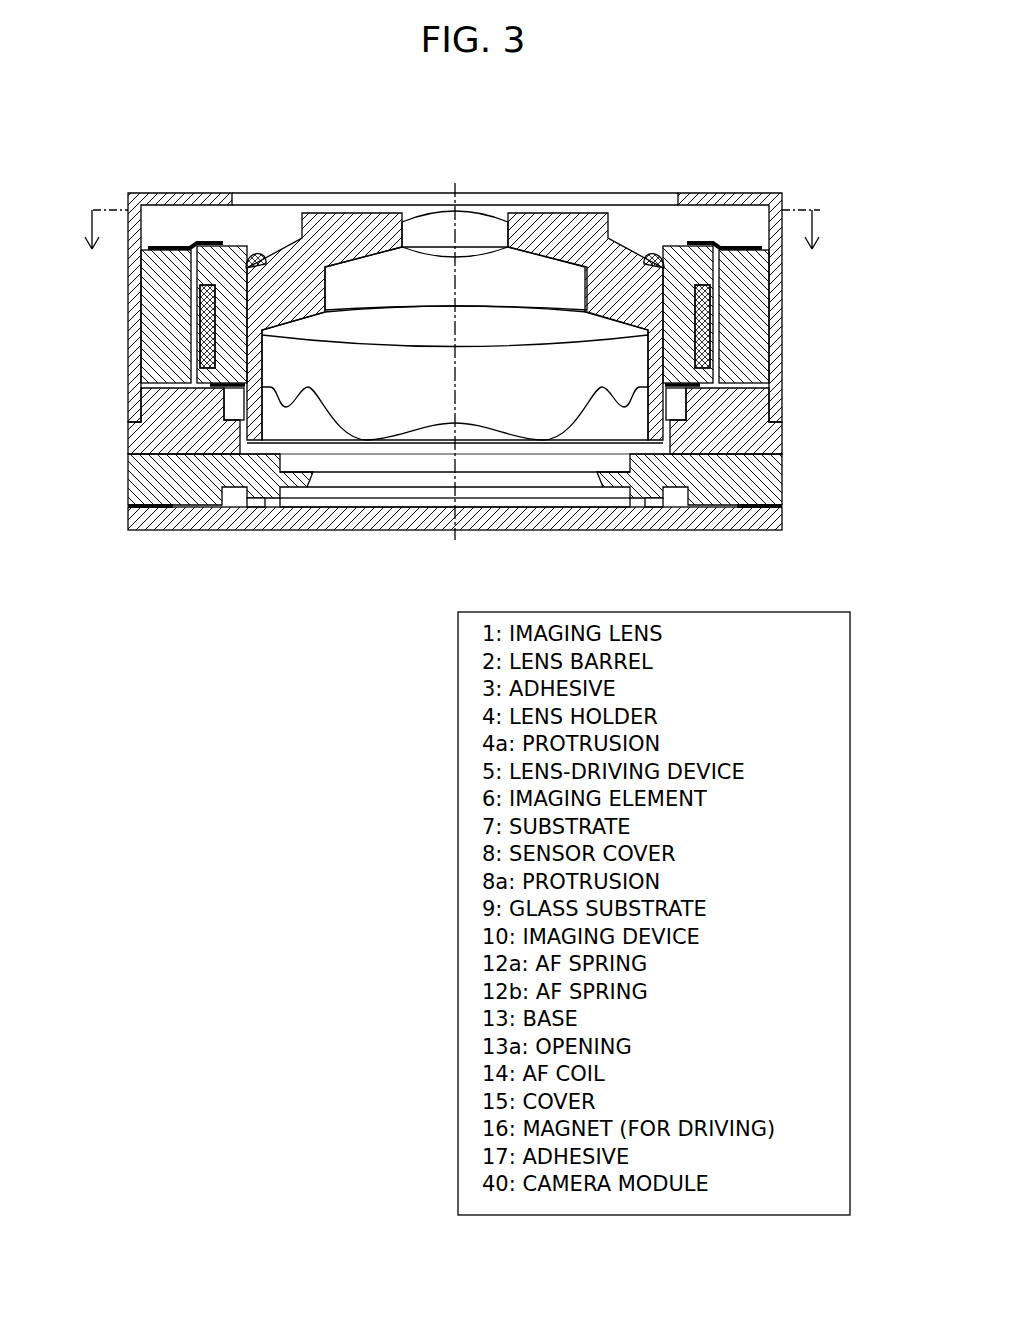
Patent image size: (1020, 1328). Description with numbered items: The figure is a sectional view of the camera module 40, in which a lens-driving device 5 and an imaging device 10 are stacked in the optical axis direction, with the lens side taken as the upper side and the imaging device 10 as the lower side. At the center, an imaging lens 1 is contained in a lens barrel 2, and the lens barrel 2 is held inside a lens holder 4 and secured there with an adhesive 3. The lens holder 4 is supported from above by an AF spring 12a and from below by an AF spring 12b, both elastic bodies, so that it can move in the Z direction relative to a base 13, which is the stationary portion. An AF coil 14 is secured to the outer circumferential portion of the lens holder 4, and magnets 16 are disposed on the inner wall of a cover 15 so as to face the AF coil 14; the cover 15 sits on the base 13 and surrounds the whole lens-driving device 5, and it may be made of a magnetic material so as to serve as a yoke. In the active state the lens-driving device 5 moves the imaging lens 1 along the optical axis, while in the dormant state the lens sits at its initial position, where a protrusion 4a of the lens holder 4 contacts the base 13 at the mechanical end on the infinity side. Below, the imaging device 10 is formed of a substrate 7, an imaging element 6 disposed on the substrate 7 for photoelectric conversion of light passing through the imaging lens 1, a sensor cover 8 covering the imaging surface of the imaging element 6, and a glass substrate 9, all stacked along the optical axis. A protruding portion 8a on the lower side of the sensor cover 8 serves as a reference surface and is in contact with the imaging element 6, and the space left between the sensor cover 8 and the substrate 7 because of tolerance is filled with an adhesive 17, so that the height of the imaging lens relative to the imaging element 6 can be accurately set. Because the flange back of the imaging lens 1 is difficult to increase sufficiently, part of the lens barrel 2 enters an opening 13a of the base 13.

The imaging lens 1 is at (490, 370).
The lens barrel 2 is at (543, 237).
The adhesive 3 is at (255, 252).
The lens holder 4 is at (225, 257).
The protrusion 4a is at (228, 389).
The lens-driving device 5 is at (830, 196).
The imaging element 6 is at (338, 500).
The substrate 7 is at (380, 517).
The sensor cover 8 is at (133, 487).
The protruding portion 8a is at (265, 493).
The glass substrate 9 is at (425, 482).
The imaging device 10 is at (830, 455).
The AF spring 12a is at (167, 247).
The AF spring 12b is at (227, 387).
The base 13 is at (135, 442).
The opening 13a is at (670, 430).
The AF coil 14 is at (203, 311).
The cover 15 is at (737, 200).
The magnet 16 is at (152, 345).
The adhesive 17 is at (130, 507).
The camera module 40 is at (792, 133).